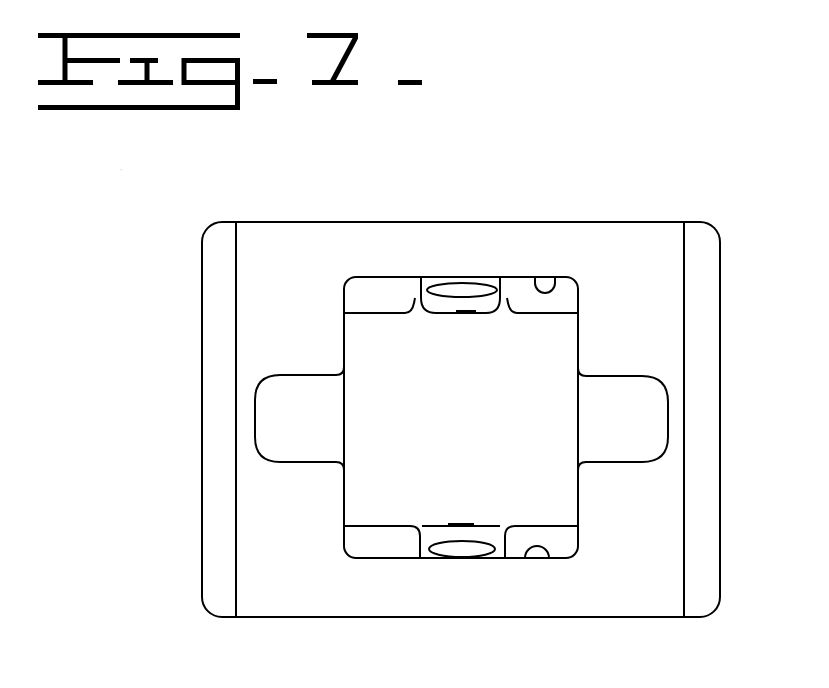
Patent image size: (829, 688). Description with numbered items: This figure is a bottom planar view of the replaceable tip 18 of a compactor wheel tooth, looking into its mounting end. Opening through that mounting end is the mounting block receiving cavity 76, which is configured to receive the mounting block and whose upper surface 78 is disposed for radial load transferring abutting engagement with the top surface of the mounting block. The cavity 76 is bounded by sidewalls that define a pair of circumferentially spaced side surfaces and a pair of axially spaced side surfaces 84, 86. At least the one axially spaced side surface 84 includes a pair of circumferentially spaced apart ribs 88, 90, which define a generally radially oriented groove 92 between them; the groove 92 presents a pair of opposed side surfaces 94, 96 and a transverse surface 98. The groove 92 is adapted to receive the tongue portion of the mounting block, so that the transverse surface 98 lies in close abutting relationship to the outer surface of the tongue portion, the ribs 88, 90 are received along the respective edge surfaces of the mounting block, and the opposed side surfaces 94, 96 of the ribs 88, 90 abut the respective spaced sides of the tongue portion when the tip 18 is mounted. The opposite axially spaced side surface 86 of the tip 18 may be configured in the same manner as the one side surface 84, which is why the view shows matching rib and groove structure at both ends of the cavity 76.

The replaceable tip 18 is at (712, 180).
The mounting block receiving cavity 76 is at (545, 408).
The upper surface 78 is at (412, 395).
The axially spaced side surface 84 is at (535, 286).
The axially spaced side surface 86 is at (543, 545).
The rib 88 is at (407, 299).
The rib 90 is at (511, 300).
The groove 92 is at (465, 322).
The opposed side surface 94 is at (418, 314).
The opposed side surface 96 is at (498, 305).
The transverse surface 98 is at (470, 283).